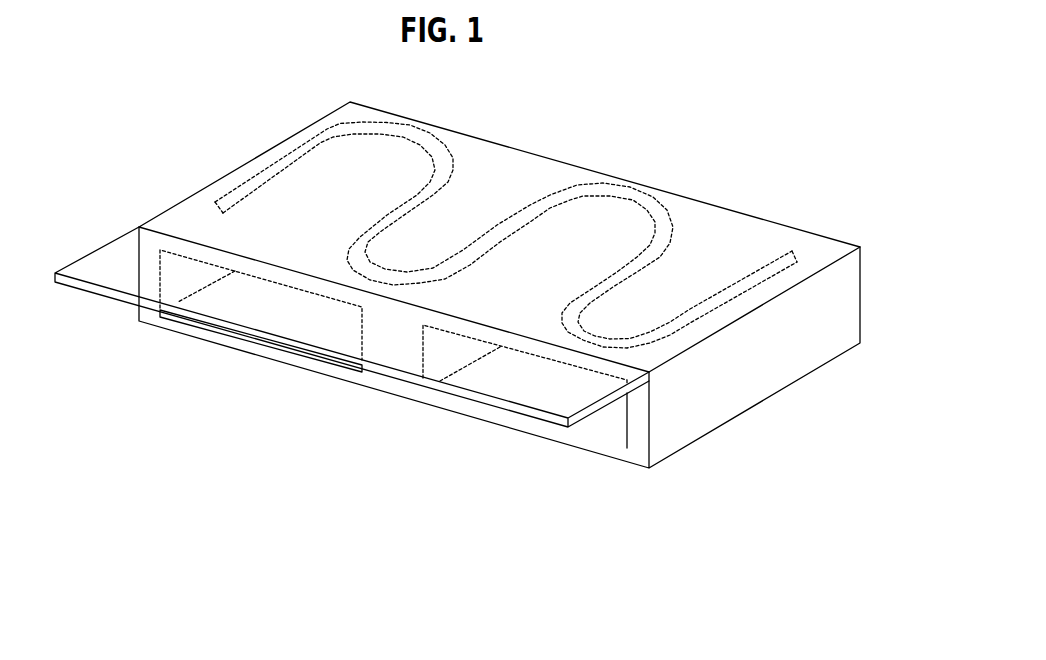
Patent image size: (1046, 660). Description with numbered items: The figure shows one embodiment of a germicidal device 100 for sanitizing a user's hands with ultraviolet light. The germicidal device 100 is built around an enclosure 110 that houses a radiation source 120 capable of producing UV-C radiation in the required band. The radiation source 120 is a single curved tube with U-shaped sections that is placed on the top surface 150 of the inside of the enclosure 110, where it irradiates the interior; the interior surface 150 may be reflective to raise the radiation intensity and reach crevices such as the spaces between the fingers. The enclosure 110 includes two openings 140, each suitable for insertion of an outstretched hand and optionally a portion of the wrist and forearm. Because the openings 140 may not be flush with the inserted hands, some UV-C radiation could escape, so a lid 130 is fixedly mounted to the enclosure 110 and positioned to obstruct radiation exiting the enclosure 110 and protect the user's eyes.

The germicidal device 100 is at (682, 99).
The enclosure 110 is at (490, 167).
The radiation source 120 is at (638, 198).
The lid 130 is at (120, 237).
The opening 140 is at (160, 311).
The top surface 150 is at (548, 380).